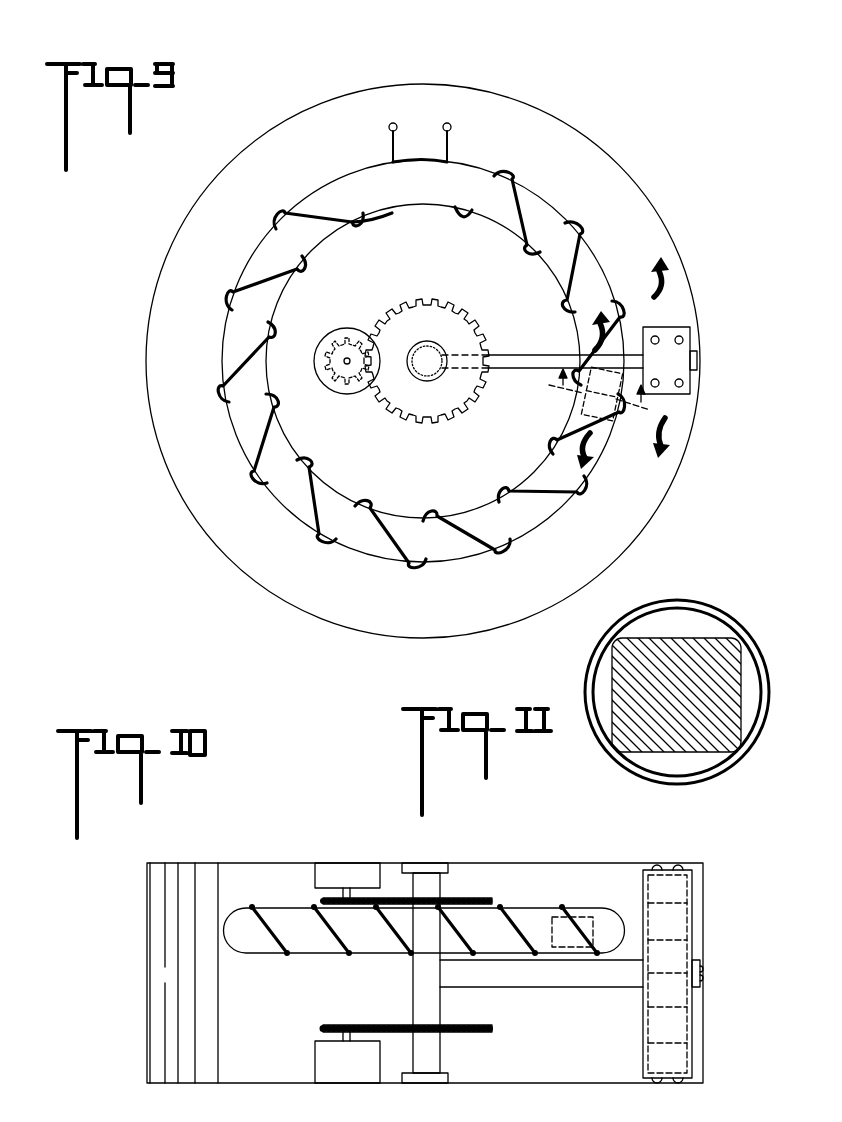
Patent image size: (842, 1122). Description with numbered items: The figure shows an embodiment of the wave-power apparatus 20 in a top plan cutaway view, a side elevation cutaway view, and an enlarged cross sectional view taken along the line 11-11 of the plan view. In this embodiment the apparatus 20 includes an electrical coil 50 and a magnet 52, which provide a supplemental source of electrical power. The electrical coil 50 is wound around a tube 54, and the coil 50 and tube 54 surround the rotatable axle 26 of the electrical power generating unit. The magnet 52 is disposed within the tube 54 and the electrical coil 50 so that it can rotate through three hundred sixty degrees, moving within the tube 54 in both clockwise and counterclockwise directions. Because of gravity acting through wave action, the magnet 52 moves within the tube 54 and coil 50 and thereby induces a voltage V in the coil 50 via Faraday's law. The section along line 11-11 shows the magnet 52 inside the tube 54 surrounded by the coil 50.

In FIG. 9, the apparatus 20 is at (688, 143).
In FIG. 10, the apparatus 20 is at (729, 855).
In FIG. 9, the rotatable axle 26 is at (437, 343).
In FIG. 10, the rotatable axle 26 is at (432, 998).
In FIG. 9, the electrical coil 50 is at (520, 218).
In FIG. 11, the electrical coil 50 is at (757, 737).
In FIG. 10, the electrical coil 50 is at (578, 926).
In FIG. 9, the magnet 52 is at (640, 394).
In FIG. 11, the magnet 52 is at (710, 688).
In FIG. 10, the magnet 52 is at (552, 926).
In FIG. 9, the tube 54 is at (607, 276).
In FIG. 11, the tube 54 is at (597, 666).
In FIG. 10, the tube 54 is at (518, 912).
In FIG. 9, the section line 11- 11 is at (595, 408).